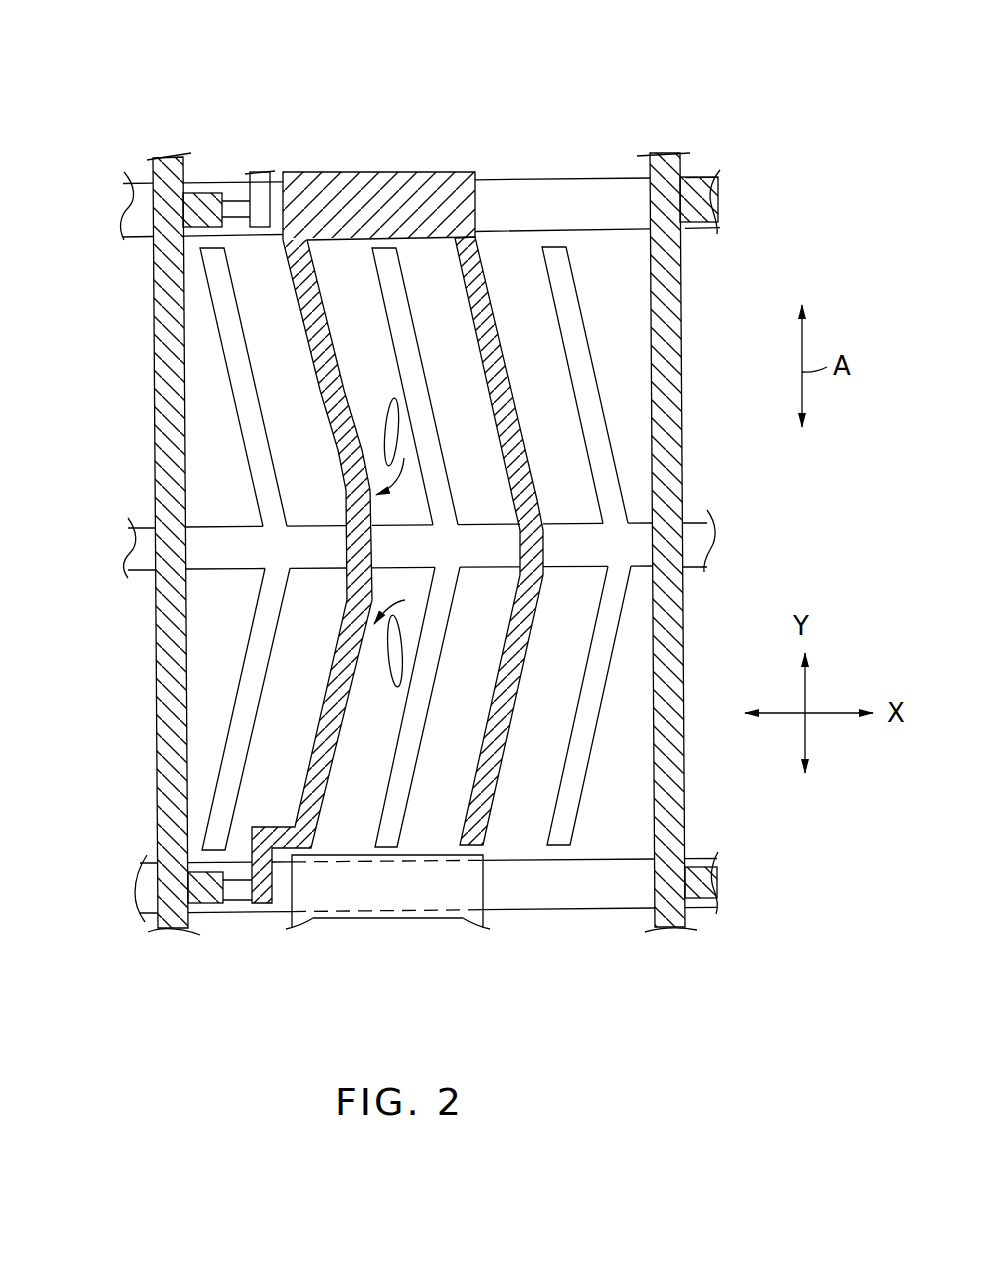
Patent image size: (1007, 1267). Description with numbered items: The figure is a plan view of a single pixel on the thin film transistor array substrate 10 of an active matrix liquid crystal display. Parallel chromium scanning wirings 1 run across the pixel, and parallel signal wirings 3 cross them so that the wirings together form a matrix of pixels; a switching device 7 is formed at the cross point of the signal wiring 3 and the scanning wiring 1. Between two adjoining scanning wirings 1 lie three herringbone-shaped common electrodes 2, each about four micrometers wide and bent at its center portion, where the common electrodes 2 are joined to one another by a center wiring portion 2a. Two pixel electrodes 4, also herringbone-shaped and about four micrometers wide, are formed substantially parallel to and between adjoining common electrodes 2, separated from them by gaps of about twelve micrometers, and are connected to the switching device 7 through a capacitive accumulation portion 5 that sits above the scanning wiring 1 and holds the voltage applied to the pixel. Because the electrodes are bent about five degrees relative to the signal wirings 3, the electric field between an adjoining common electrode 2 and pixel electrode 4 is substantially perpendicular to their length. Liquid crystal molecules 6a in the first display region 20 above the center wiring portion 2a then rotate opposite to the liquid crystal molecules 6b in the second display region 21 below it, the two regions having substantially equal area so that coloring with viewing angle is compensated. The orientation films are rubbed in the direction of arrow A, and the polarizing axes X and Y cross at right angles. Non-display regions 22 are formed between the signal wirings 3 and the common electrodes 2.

The scanning wiring 1 is at (498, 213).
The common electrode 2 is at (408, 328).
The center wiring portion 2a is at (590, 547).
The signal wiring 3 is at (170, 930).
The pixel electrode 4 is at (298, 305).
The capacitive accumulation portion 5 is at (428, 170).
The liquid crystal molecules 6a is at (383, 437).
The liquid crystal molecules 6b is at (333, 828).
The switching device 7 is at (235, 915).
The array substrate 10 is at (215, 167).
The first display region 20 is at (320, 265).
The second display region 21 is at (393, 642).
The non-display region 22 is at (195, 314).